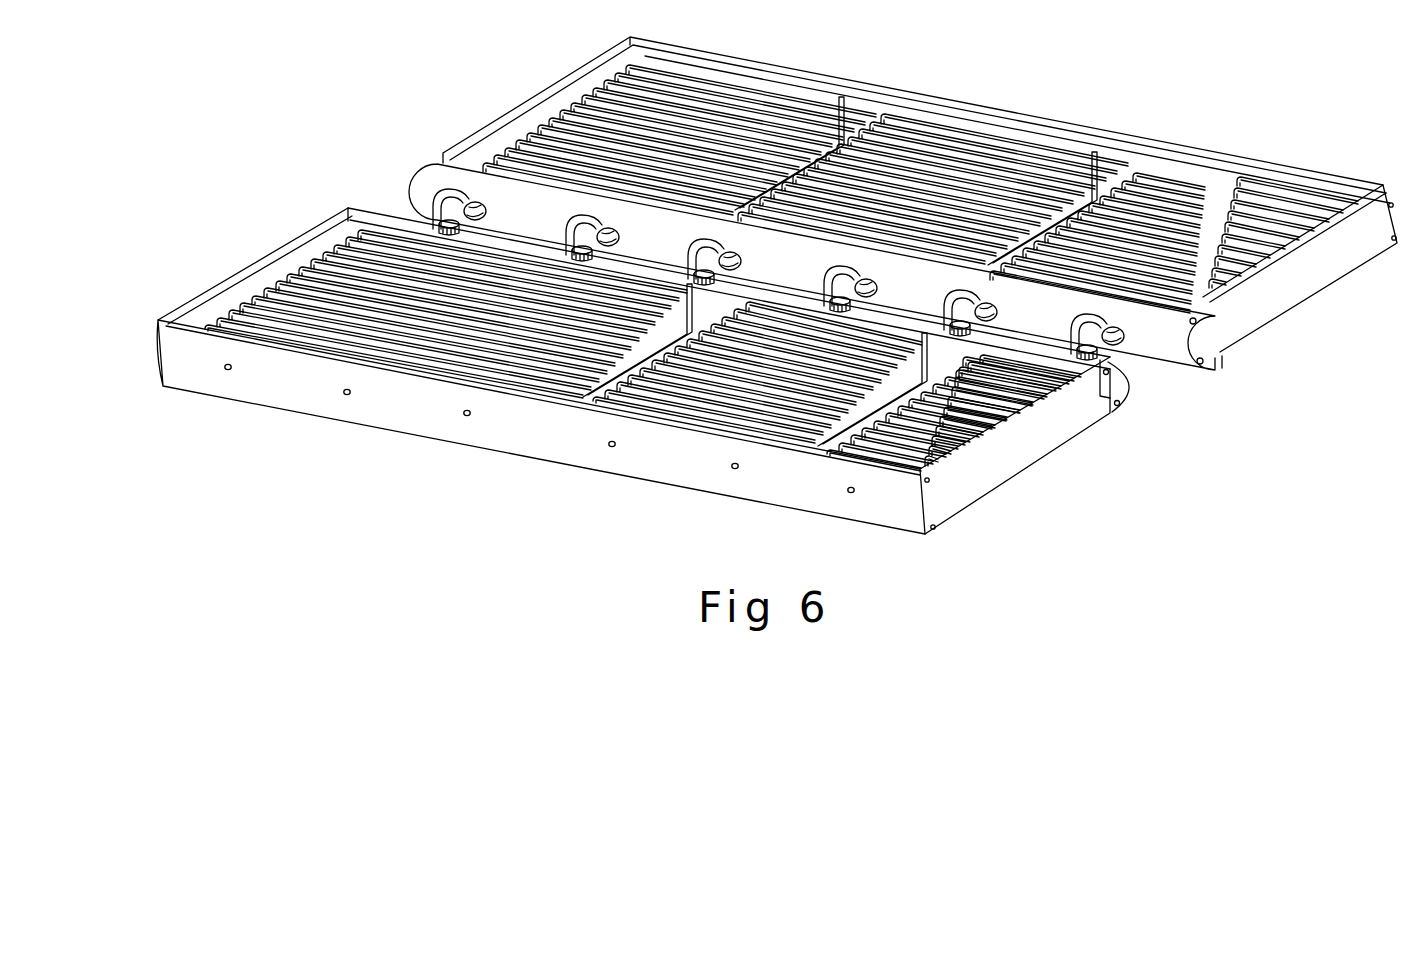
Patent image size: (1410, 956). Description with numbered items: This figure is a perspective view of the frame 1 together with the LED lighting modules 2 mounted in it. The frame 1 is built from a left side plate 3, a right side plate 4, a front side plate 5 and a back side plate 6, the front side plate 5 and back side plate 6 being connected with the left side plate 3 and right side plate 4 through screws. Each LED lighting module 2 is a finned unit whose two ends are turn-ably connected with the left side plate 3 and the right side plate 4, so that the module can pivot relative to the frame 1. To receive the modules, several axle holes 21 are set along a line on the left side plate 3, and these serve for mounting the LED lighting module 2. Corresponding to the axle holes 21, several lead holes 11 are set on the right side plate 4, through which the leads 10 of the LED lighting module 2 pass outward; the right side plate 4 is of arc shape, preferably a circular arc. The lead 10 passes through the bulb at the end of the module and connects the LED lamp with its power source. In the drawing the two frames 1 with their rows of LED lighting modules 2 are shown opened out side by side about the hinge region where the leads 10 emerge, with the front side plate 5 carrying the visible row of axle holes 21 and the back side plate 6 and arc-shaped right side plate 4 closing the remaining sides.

The frame 1 is at (244, 226).
The LED lighting module 2 is at (357, 258).
The left side plate 3 is at (420, 407).
The right side plate 4 is at (498, 247).
The front side plate 5 is at (223, 300).
The back side plate 6 is at (1003, 443).
The lead 10 is at (1113, 355).
The lead hole 11 is at (1120, 353).
The axle hole 21 is at (613, 445).